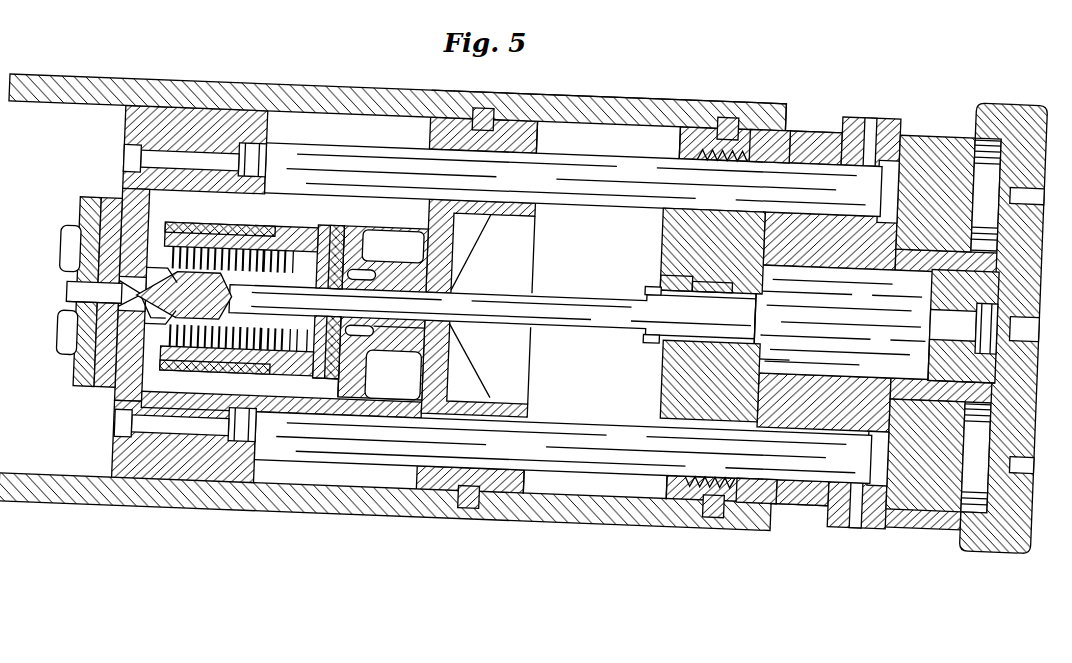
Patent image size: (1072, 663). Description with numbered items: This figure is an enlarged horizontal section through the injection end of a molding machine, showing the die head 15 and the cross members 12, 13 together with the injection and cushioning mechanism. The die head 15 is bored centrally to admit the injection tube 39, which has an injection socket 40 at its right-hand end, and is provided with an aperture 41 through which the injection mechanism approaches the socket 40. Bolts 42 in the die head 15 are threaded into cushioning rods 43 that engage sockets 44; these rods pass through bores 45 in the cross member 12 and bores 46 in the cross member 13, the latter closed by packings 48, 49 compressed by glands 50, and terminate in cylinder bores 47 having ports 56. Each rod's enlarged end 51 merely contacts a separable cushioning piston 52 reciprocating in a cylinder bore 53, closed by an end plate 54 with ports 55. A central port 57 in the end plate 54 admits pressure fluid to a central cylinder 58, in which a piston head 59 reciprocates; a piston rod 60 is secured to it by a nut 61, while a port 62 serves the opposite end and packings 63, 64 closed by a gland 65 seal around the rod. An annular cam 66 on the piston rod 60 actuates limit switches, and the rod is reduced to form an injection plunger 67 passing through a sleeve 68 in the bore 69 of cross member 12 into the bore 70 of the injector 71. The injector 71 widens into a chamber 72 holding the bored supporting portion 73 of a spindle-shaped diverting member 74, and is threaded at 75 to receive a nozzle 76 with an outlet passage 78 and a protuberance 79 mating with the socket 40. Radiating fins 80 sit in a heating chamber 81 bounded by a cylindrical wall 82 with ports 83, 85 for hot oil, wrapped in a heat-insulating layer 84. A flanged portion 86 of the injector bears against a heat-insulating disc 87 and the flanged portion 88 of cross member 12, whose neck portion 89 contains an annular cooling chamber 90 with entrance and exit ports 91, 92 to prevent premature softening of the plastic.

The cross member 12 is at (522, 120).
The cross member 13 is at (800, 131).
The die head 15 is at (172, 120).
The injection tube 39 is at (80, 298).
The injection socket 40 is at (120, 300).
The aperture 41 is at (160, 262).
The bolts 42 is at (128, 152).
The cushioning rods 43 is at (340, 155).
The sockets 44 is at (268, 146).
The bores 45 is at (478, 118).
The bores 46 is at (772, 130).
The cylinder bores 47 is at (850, 115).
The packing 48 is at (732, 118).
The packing 49 is at (725, 122).
The glands 50 is at (675, 140).
The enlarged end 51 is at (890, 160).
The cushioning pistons 52 is at (982, 140).
The cylinder bores 53 is at (928, 136).
The end plate 54 is at (1044, 112).
The ports 55 is at (1034, 194).
The ports 56 is at (871, 120).
The central port 57 is at (1010, 305).
The central cylinder 58 is at (800, 340).
The piston head 59 is at (985, 355).
The piston rod 60 is at (877, 336).
The nut 61 is at (995, 285).
The port 62 is at (665, 355).
The packing 63 is at (680, 242).
The packing 64 is at (690, 252).
The gland 65 is at (705, 262).
The annular cam 66 is at (648, 332).
The injection plunger 67 is at (570, 300).
The sleeve 68 is at (462, 288).
The bore 69 is at (465, 320).
The bore 70 is at (330, 235).
The injector 71 is at (285, 241).
The chamber 72 is at (215, 280).
The bored supporting portion 73 is at (200, 250).
The diverting member 74 is at (185, 342).
The threaded portion 75 is at (175, 250).
The nozzle 76 is at (175, 331).
The outlet passage 78 is at (137, 308).
The protuberance 79 is at (80, 266).
The radiating fins 80 is at (270, 346).
The heating chamber 81 is at (312, 362).
The cylindrical wall 82 is at (262, 241).
The port 83 is at (295, 346).
The heat-insulating layer 84 is at (228, 342).
The port 85 is at (183, 230).
The flanged portion 86 is at (335, 371).
The heat-insulating disc 87 is at (348, 235).
The flanged portion 88 is at (372, 372).
The neck portion 89 is at (405, 336).
The annular chamber 90 is at (375, 241).
The entrance port 91 is at (370, 262).
The exit port 92 is at (372, 336).